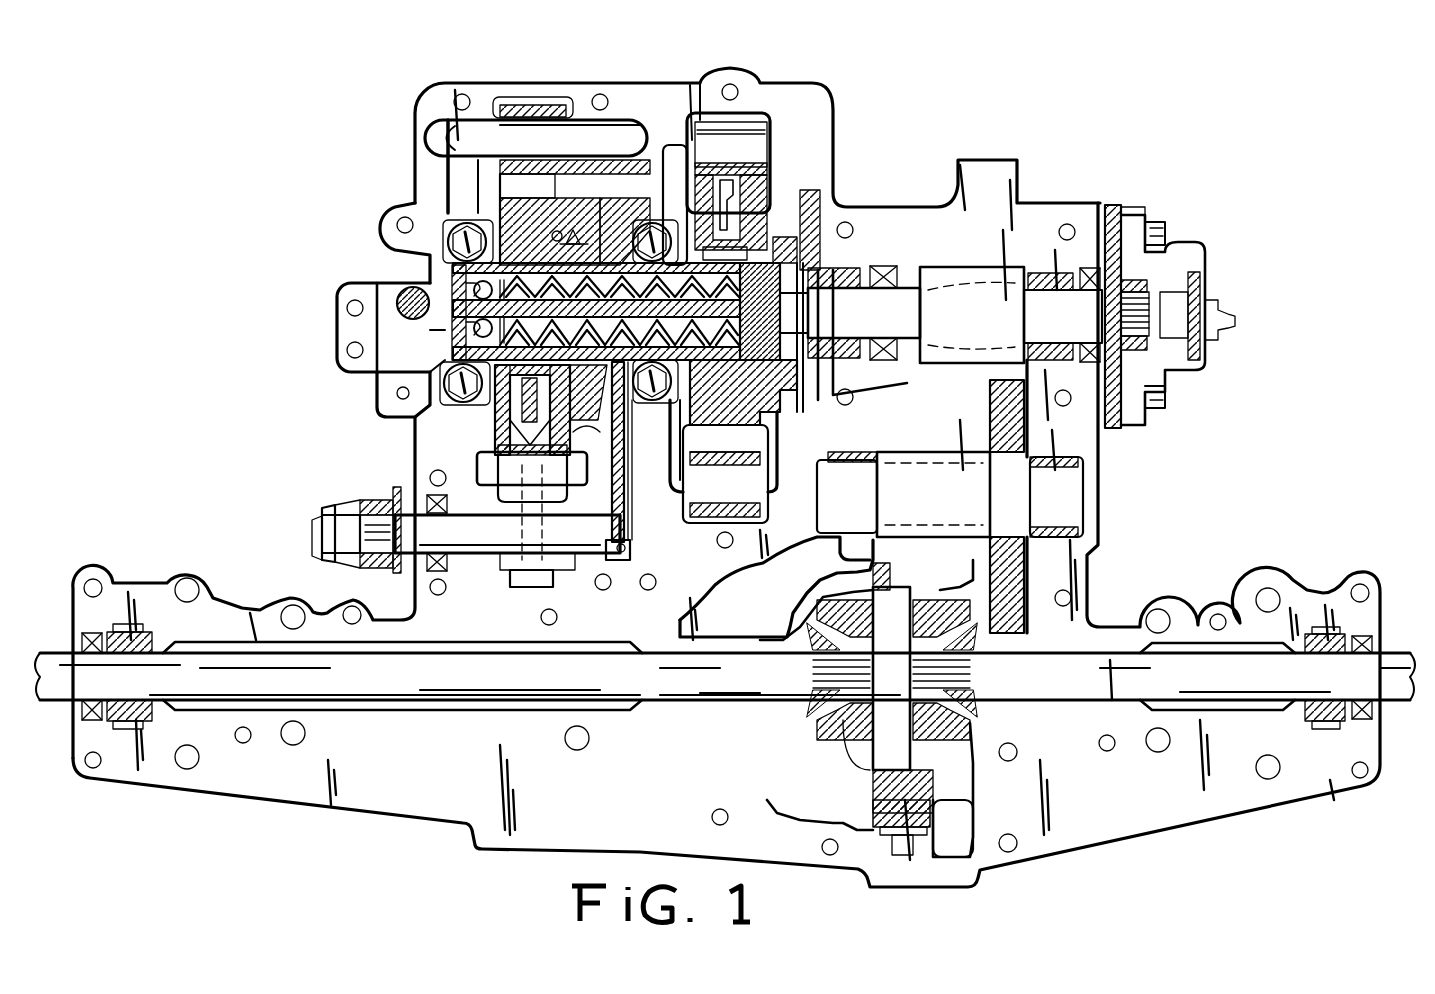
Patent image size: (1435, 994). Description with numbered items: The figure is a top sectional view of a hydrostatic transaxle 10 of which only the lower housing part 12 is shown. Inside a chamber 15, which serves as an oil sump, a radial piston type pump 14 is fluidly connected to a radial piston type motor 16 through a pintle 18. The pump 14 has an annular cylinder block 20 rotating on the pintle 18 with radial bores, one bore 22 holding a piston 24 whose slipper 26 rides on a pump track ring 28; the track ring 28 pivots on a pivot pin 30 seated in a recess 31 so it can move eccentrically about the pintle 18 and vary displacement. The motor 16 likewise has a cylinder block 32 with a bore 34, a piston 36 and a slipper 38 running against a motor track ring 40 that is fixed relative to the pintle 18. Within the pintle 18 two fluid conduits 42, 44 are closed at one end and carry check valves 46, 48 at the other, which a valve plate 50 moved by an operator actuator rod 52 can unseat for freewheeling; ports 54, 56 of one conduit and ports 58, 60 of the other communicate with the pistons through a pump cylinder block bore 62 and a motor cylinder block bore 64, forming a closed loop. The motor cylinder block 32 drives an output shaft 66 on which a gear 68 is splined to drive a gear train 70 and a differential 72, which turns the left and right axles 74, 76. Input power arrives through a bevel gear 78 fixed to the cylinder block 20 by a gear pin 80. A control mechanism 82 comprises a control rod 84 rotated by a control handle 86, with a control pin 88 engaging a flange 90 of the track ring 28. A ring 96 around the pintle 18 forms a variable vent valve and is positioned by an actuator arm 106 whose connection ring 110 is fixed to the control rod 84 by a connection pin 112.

The hydrostatic transaxle 10 is at (183, 402).
The lower housing part 12 is at (342, 323).
The radial piston type pump 14 is at (447, 197).
The chamber 15 is at (808, 398).
The radial piston type motor 16 is at (822, 177).
The pintle 18 is at (787, 353).
The pump cylinder block 20 is at (544, 239).
The pump cylinder block bore 22 is at (480, 440).
The pump piston 24 is at (495, 410).
The pump piston slipper 26 is at (497, 483).
The pump track ring 28 is at (500, 177).
The pivot pin 30 is at (513, 150).
The recess 31 is at (437, 130).
The motor cylinder block 32 is at (724, 397).
The motor cylinder block bore 34 is at (787, 227).
The motor piston 36 is at (747, 183).
The motor piston slipper 38 is at (757, 158).
The motor track ring 40 is at (744, 497).
The fluid conduit 42 is at (670, 398).
The fluid conduit 44 is at (678, 150).
The check valve 46 is at (437, 341).
The check valve 48 is at (440, 281).
The valve plate 50 is at (410, 273).
The actuator rod 52 is at (397, 313).
The conduit port 54 is at (437, 378).
The conduit port 56 is at (759, 336).
The conduit port 58 is at (452, 235).
The conduit port 60 is at (808, 303).
The pump cylinder block bore 62 is at (443, 404).
The motor cylinder block bore 64 is at (807, 267).
The output shaft 66 is at (895, 325).
The gear 68 is at (985, 325).
The gear train 70 is at (1110, 493).
The differential 72 is at (1003, 723).
The left axle 74 is at (436, 688).
The right axle 76 is at (1205, 693).
The bevel gear 78 is at (573, 230).
The gear pin 80 is at (515, 257).
The control mechanism 82 is at (567, 590).
The control rod 84 is at (463, 546).
The control handle 86 is at (393, 565).
The control pin 88 is at (497, 570).
The flange 90 is at (550, 490).
The ring 96 is at (620, 233).
The actuator arm 106 is at (627, 493).
The connection ring 110 is at (656, 581).
The connection pin 112 is at (630, 540).